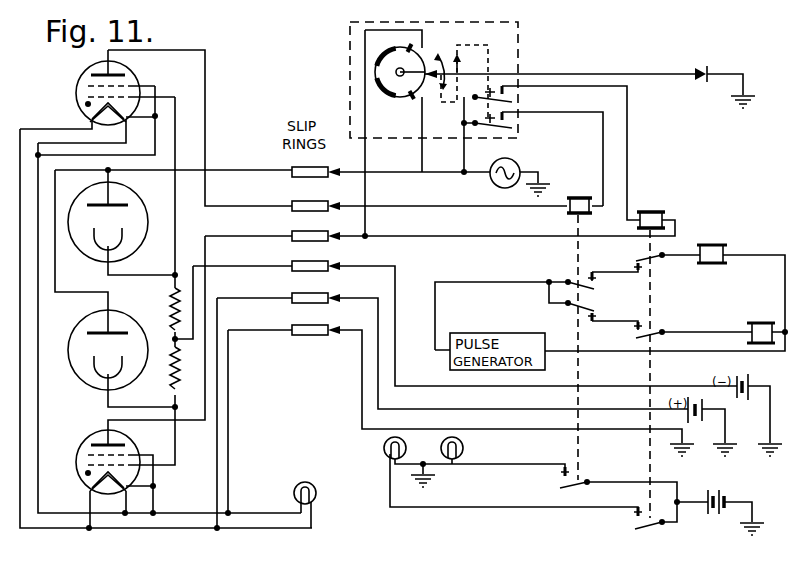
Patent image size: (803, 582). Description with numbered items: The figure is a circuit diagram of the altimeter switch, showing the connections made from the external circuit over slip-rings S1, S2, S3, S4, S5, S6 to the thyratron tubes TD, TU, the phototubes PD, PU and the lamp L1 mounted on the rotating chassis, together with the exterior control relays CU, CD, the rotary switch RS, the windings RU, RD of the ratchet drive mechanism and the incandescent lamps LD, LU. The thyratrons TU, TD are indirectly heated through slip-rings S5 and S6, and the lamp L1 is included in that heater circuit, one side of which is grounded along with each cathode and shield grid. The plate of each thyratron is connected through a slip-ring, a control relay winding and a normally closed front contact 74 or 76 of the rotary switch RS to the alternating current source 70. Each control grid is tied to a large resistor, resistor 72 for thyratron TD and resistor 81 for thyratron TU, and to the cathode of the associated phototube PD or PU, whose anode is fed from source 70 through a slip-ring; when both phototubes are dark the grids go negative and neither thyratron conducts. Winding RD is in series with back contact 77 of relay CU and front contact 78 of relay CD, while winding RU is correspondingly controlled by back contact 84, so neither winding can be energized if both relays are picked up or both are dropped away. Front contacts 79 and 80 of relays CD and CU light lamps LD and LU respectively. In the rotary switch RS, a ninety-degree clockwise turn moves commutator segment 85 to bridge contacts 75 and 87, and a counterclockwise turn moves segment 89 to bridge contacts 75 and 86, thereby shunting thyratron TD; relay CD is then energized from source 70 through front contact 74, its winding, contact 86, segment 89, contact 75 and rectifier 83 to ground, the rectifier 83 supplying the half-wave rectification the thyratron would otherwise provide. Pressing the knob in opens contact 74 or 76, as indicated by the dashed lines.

The alternating current source 70 is at (494, 182).
The resistor 72 is at (170, 306).
The front contact 74 is at (512, 128).
The contact 75 is at (444, 78).
The front contact 76 is at (512, 102).
The back contact 77 is at (654, 258).
The front contact 78 is at (575, 280).
The front contact 79 is at (580, 486).
The front contact 80 is at (652, 526).
The resistor 81 is at (170, 382).
The rectifier 83 is at (701, 69).
The back contact 84 is at (575, 307).
The commutator segment 85 is at (394, 65).
The contact 86 is at (416, 99).
The contact 87 is at (418, 47).
The commutator segment 89 is at (382, 94).
The rotary switch RS is at (350, 62).
The thyratron tube TD is at (88, 66).
The phototube PD is at (86, 191).
The phototube PU is at (78, 318).
The thyratron tube TU is at (82, 437).
The slip-ring S1 is at (293, 167).
The slip-ring S2 is at (293, 201).
The slip-ring S3 is at (293, 231).
The slip-ring S4 is at (293, 261).
The slip-ring S5 is at (293, 293).
The slip-ring S6 is at (293, 325).
The control relay CD is at (577, 197).
The control relay CU is at (650, 211).
The winding RD is at (704, 245).
The winding RU is at (749, 324).
The incandescent lamp LU is at (385, 446).
The incandescent lamp LD is at (463, 446).
The lamp L1 is at (307, 484).